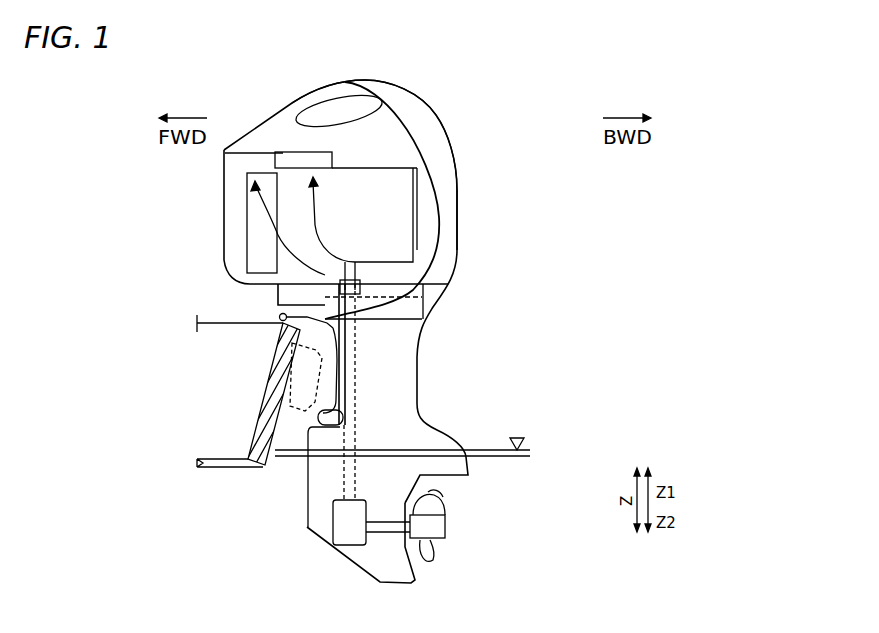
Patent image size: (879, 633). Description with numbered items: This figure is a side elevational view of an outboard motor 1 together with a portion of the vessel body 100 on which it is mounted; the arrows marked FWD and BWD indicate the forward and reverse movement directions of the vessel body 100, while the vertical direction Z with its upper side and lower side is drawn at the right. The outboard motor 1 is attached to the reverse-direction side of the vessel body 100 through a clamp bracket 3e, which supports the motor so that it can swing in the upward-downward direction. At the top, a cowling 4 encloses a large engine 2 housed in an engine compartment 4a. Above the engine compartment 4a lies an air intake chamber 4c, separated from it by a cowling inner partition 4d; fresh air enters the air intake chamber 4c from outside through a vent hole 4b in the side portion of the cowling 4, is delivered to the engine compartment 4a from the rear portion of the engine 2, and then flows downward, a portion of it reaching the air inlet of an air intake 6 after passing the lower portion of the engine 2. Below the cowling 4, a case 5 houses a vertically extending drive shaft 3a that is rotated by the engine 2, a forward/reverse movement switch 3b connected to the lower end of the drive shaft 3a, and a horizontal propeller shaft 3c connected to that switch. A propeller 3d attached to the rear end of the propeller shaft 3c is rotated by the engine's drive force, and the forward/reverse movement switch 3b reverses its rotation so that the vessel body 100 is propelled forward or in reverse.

The outboard motor 1 is at (469, 164).
The engine 2 is at (415, 213).
The drive shaft 3a is at (357, 338).
The forward/reverse movement switch 3b is at (332, 509).
The propeller shaft 3c is at (373, 535).
The propeller 3d is at (437, 552).
The clamp bracket 3e is at (297, 329).
The cowling 4 is at (270, 138).
The engine compartment 4a is at (440, 181).
The vent hole 4b is at (325, 141).
The air intake chamber 4c is at (285, 130).
The cowling inner partition 4d is at (395, 136).
The case 5 is at (417, 378).
The air intake 6 is at (248, 220).
The vessel body 100 is at (203, 471).